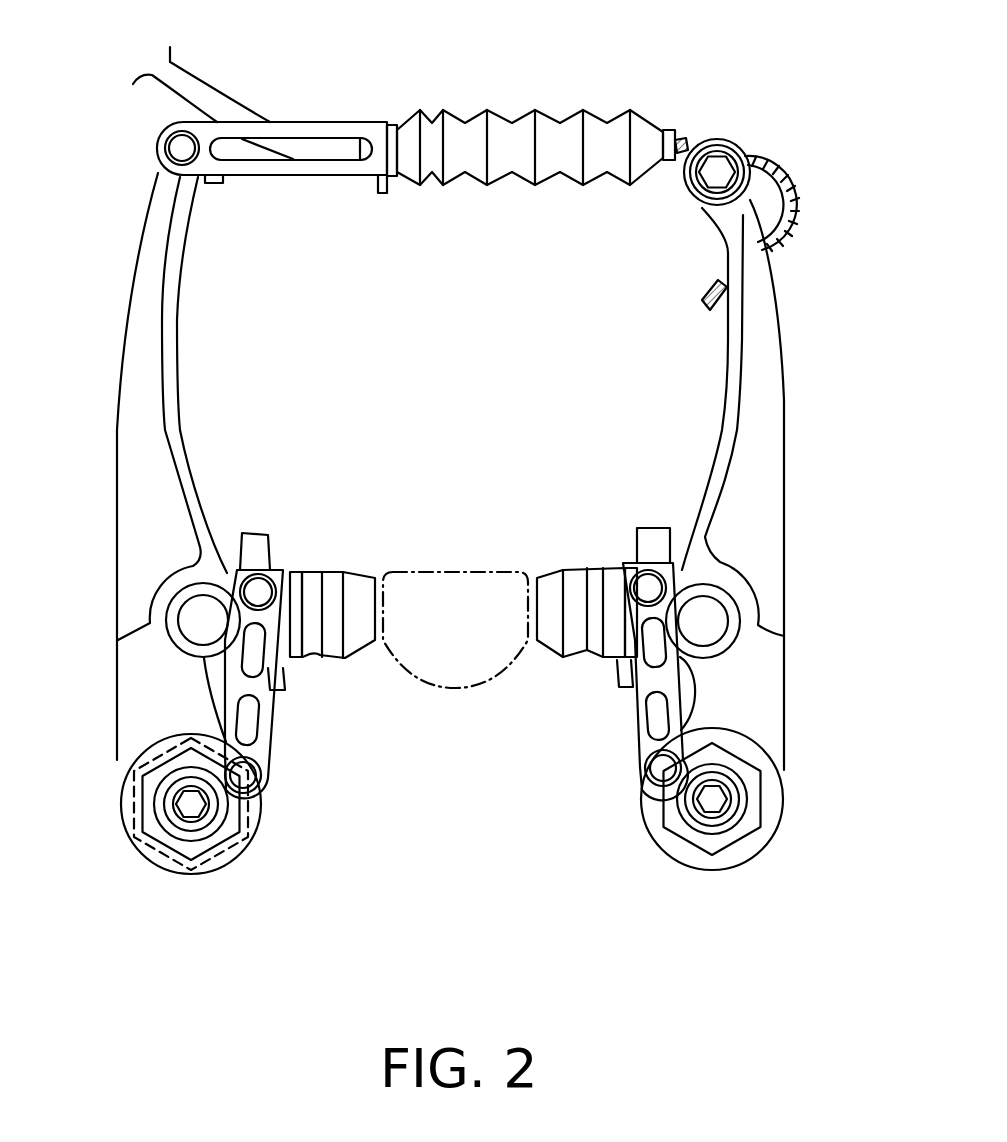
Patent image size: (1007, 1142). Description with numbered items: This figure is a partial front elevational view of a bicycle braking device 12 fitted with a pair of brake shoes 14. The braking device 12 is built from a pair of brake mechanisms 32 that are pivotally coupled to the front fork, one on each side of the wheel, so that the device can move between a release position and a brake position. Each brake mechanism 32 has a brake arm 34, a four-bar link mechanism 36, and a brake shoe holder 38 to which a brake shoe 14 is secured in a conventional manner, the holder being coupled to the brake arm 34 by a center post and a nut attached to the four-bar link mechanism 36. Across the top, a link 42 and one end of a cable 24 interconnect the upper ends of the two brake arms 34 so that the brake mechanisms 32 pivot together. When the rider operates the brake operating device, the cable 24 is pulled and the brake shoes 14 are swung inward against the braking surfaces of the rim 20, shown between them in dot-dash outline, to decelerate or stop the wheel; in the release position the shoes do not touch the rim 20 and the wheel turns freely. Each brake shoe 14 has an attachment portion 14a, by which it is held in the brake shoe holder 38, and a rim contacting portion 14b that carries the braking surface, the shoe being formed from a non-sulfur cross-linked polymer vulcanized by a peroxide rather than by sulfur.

The bicycle braking device 12 is at (772, 116).
The brake shoe 14 is at (357, 566).
The attachment portion 14a is at (333, 660).
The rim contacting portion 14b is at (365, 660).
The rim 20 is at (455, 572).
The cable 24 is at (690, 135).
The brake mechanism 32 is at (116, 665).
The brake arm 34 is at (190, 448).
The four-bar link mechanism 36 is at (218, 705).
The brake shoe holder 38 is at (300, 566).
The link 42 is at (272, 180).